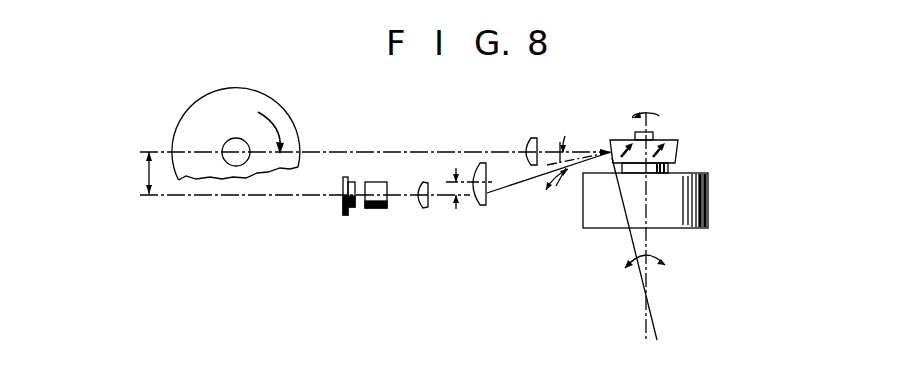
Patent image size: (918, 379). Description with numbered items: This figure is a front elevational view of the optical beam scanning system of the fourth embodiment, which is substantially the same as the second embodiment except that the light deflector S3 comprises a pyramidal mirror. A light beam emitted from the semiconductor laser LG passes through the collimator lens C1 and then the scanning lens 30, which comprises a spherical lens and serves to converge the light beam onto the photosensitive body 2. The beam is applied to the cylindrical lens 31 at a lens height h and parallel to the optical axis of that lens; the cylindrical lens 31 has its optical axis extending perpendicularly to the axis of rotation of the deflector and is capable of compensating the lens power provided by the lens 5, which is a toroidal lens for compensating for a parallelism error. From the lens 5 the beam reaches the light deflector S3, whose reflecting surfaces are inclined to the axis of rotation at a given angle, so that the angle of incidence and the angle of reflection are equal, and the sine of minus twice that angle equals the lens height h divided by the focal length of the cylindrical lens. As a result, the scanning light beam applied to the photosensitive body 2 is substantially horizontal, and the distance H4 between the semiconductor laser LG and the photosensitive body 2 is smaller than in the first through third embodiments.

The photosensitive body 2 is at (290, 126).
The distance between semiconductor laser and photosensitive body H4 is at (151, 176).
The semiconductor laser LG is at (338, 208).
The collimator lens C1 is at (376, 210).
The scanning lens 30 is at (421, 209).
The lens height h is at (452, 200).
The cylindrical lens 31 is at (481, 207).
The lens 5 is at (532, 137).
The light deflector S3 is at (699, 150).